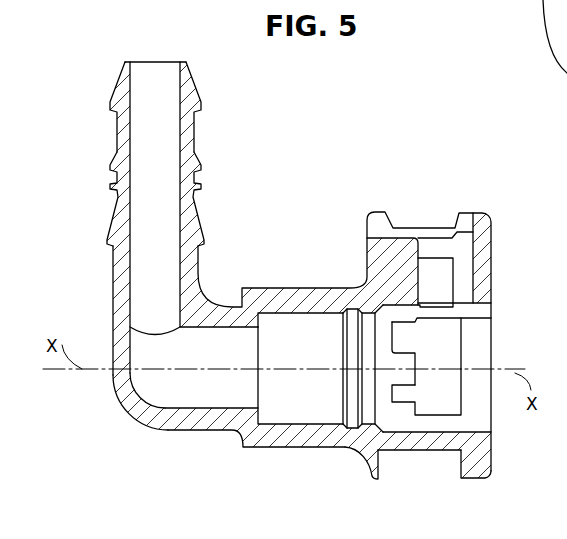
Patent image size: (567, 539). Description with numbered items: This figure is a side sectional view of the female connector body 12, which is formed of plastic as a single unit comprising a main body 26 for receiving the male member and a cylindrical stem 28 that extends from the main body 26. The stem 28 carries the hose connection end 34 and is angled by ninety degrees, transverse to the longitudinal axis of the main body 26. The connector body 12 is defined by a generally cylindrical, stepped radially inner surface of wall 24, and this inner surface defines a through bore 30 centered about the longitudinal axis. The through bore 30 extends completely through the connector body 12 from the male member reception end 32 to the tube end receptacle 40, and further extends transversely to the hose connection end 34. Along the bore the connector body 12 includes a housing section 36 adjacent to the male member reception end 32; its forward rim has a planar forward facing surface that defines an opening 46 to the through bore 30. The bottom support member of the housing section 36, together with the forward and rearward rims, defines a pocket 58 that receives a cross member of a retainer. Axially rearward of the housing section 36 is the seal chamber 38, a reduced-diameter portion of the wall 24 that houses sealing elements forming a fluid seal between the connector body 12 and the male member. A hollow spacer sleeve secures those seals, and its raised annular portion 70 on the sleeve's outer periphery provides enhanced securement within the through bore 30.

The female connector body 12 is at (368, 173).
The wall 24 is at (309, 318).
The main body 26 is at (332, 460).
The cylindrical stem 28 is at (117, 231).
The through bore 30 is at (247, 386).
The male member reception end 32 is at (497, 238).
The hose connection end 34 is at (122, 79).
The housing section 36 is at (413, 412).
The seal chamber 38 is at (300, 410).
The tube end receptacle 40 is at (193, 397).
The opening 46 is at (495, 340).
The pocket 58 is at (442, 463).
The raised annular portion 70 is at (172, 160).